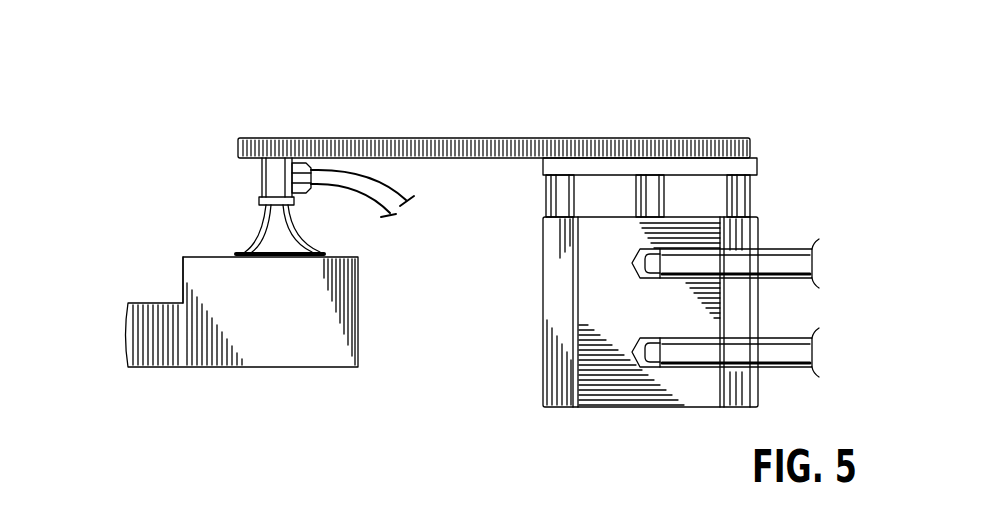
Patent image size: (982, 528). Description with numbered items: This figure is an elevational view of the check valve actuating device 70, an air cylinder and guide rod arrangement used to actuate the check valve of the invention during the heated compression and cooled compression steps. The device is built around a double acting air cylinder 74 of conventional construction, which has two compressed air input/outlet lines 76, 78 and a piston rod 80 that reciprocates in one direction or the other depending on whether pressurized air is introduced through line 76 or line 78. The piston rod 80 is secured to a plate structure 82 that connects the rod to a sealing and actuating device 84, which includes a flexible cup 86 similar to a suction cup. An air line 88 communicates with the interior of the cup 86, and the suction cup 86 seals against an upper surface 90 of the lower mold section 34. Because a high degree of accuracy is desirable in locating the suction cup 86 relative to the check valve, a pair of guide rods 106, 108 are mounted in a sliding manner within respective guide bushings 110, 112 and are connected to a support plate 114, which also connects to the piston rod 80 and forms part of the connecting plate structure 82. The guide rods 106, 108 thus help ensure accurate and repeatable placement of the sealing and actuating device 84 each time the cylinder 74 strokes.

The check valve actuating device 70 is at (296, 107).
The plate structure 82 is at (737, 138).
The support plate 114 is at (757, 168).
The guide rod 108 is at (752, 196).
The guide rod 106 is at (566, 212).
The piston rod 80 is at (660, 212).
The double acting air cylinder 74 is at (623, 313).
The guide bushing 110 is at (551, 310).
The guide bushing 112 is at (752, 312).
The compressed air input/outlet line 76 is at (782, 250).
The compressed air input/outlet line 78 is at (782, 340).
The sealing and actuating device 84 is at (238, 200).
The air line 88 is at (392, 192).
The flexible cup 86 is at (305, 250).
The lower mold section 34 is at (359, 290).
The upper surface 90 is at (185, 258).